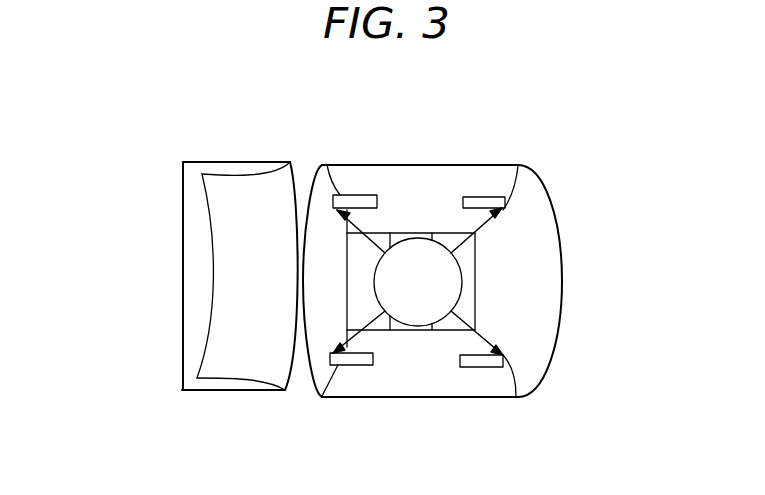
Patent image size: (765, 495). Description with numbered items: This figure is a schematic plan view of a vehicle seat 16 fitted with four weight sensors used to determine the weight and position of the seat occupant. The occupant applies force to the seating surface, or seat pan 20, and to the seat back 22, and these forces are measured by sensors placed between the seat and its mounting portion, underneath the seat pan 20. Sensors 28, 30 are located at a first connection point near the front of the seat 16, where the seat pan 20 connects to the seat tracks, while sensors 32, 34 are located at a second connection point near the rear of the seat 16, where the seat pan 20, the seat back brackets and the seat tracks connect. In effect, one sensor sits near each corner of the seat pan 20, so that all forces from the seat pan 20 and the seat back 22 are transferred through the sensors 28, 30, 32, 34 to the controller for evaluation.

The seat 16 is at (160, 212).
The seat pan 20 is at (535, 283).
The seat back 22 is at (233, 333).
The sensor 28 is at (481, 197).
The sensor 30 is at (483, 367).
The sensor 32 is at (363, 195).
The sensor 34 is at (348, 366).